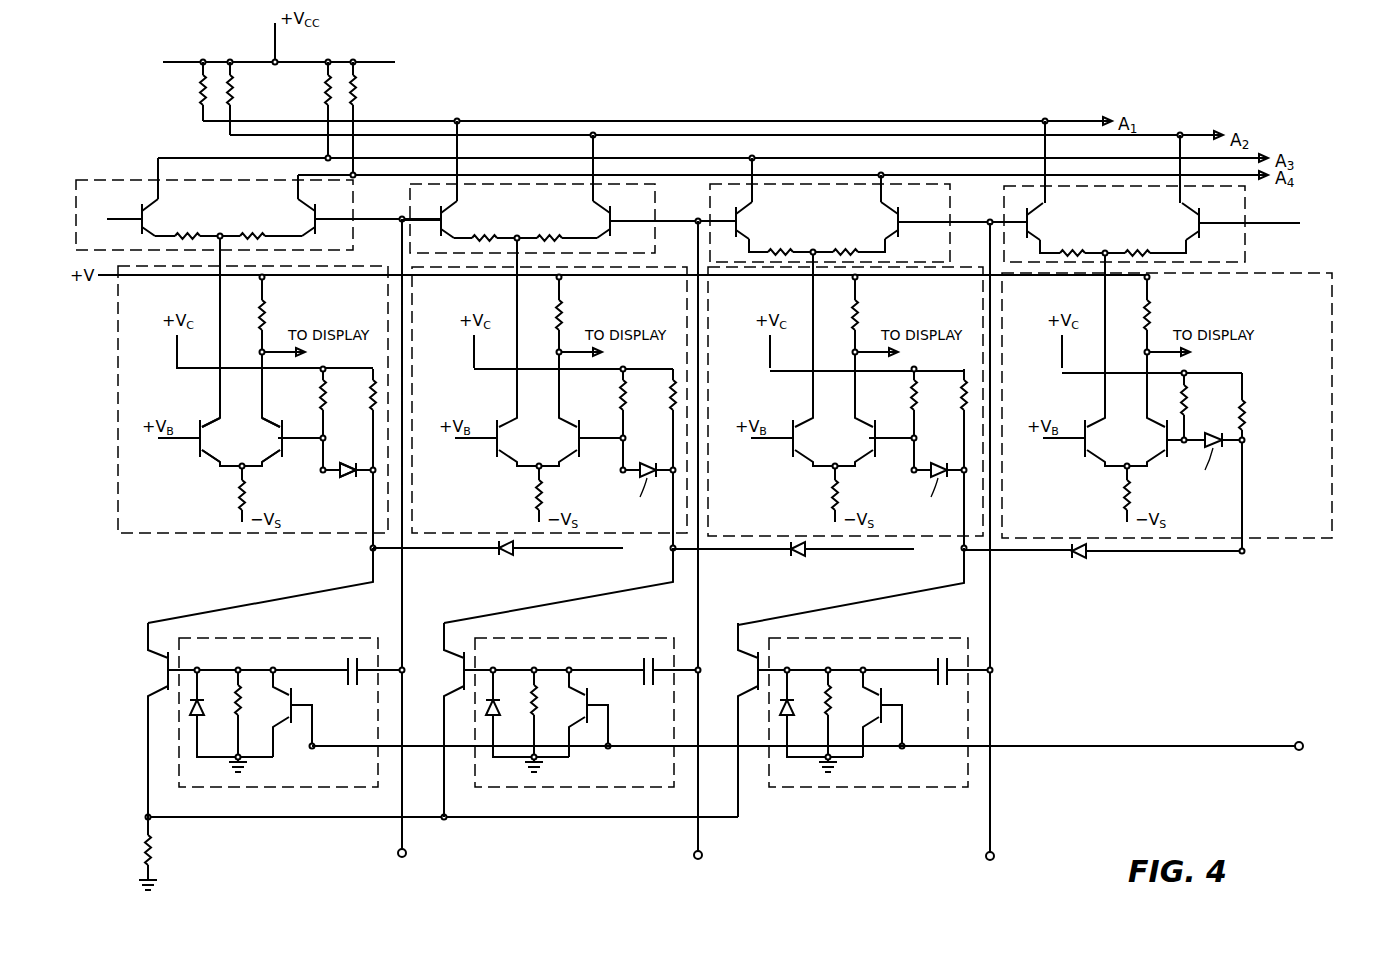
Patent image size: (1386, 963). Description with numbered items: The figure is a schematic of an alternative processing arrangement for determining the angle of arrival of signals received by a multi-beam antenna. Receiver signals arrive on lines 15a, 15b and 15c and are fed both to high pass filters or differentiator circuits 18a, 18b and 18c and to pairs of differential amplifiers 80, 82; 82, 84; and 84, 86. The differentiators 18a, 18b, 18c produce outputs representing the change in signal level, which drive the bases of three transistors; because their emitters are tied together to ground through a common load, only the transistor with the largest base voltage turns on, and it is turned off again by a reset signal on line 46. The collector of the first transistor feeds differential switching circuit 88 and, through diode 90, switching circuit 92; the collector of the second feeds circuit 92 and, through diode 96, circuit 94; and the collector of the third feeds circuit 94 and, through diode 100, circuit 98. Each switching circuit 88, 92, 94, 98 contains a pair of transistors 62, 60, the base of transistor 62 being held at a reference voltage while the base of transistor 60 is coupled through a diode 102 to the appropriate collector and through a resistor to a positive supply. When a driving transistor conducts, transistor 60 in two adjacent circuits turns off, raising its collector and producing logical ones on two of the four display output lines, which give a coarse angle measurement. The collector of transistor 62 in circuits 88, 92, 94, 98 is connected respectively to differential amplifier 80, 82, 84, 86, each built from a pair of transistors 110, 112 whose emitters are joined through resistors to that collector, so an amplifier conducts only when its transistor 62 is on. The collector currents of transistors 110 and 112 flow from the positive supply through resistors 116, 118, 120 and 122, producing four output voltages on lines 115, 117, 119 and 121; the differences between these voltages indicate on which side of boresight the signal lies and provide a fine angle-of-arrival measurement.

The differential amplifier 80 is at (258, 223).
The differential amplifier 82 is at (410, 206).
The differential amplifier 84 is at (710, 206).
The differential amplifier 86 is at (1004, 207).
The differential switching circuit 88 is at (253, 422).
The differential switching circuit 92 is at (654, 542).
The differential switching circuit 94 is at (940, 542).
The differential switching circuit 98 is at (1210, 545).
The diode 90 is at (507, 556).
The diode 96 is at (800, 557).
The diode 100 is at (1078, 559).
The diode 102 is at (347, 478).
The transistor 110 is at (159, 217).
The transistor 112 is at (298, 217).
The transistor 60 is at (265, 440).
The transistor 62 is at (216, 440).
The line 115 is at (512, 121).
The line 117 is at (563, 135).
The line 119 is at (650, 158).
The line 121 is at (697, 175).
The resistor 116 is at (160, 91).
The resistor 118 is at (248, 98).
The resistor 120 is at (307, 110).
The resistor 122 is at (371, 118).
The differentiator circuit 18a is at (319, 638).
The differentiator circuit 18b is at (595, 640).
The differentiator circuit 18c is at (879, 642).
The line 15a is at (402, 823).
The line 15b is at (700, 823).
The line 15c is at (990, 828).
The line 46 is at (1207, 746).